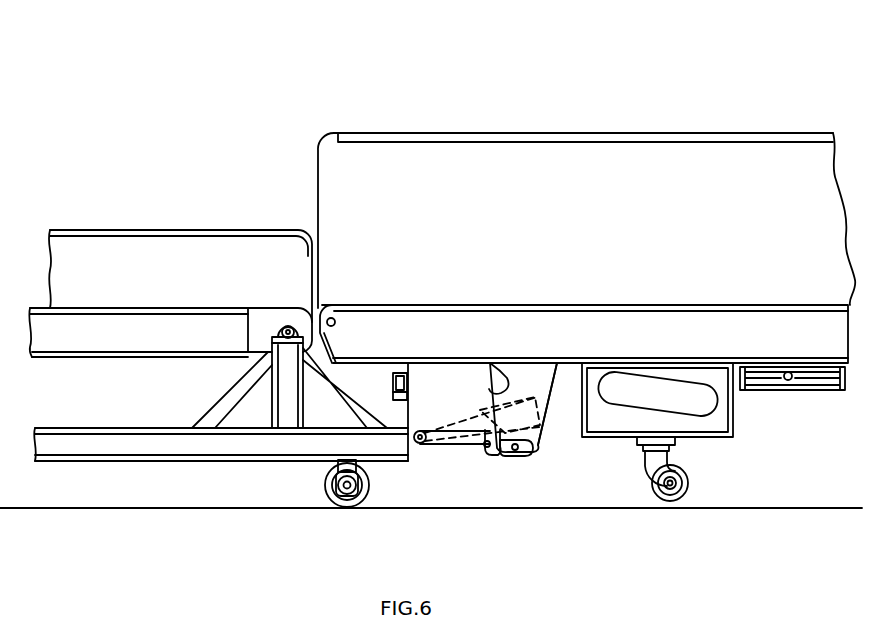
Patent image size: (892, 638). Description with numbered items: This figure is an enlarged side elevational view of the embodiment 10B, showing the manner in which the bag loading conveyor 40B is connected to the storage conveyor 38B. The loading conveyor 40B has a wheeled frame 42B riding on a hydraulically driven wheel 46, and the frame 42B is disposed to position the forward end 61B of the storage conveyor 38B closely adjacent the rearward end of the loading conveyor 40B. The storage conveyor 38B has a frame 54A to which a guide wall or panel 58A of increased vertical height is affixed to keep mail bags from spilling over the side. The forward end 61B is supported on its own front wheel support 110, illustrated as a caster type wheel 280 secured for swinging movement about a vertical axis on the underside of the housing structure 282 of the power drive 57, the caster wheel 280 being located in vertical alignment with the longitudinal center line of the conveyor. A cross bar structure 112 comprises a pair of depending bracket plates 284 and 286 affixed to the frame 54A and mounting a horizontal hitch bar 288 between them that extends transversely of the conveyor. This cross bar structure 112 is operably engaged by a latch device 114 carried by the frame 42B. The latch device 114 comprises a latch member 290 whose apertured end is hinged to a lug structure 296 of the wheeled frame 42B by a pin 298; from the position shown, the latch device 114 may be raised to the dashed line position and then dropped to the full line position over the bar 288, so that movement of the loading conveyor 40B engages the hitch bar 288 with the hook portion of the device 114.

The embodiment 10B is at (556, 93).
The storage conveyor 38B is at (687, 128).
The guide wall or panel 58A is at (447, 158).
The bag loading conveyor 40B is at (151, 218).
The forward end 61B is at (355, 323).
The frame 54A is at (658, 328).
The power drive 57 is at (701, 378).
The housing structure 282 is at (734, 406).
The caster type wheel 280 is at (682, 470).
The front wheel support 110 is at (638, 470).
The cross bar structure 112 is at (548, 372).
The depending bracket plate 284 is at (515, 374).
The depending bracket plate 286 is at (499, 374).
The pin 298 is at (421, 431).
The latch member 290 is at (470, 444).
The latch device 114 is at (474, 464).
The hitch bar 288 is at (515, 455).
The lug structure 296 is at (414, 456).
The hydraulically driven wheel 46 is at (334, 511).
The wheeled frame 42B is at (206, 470).